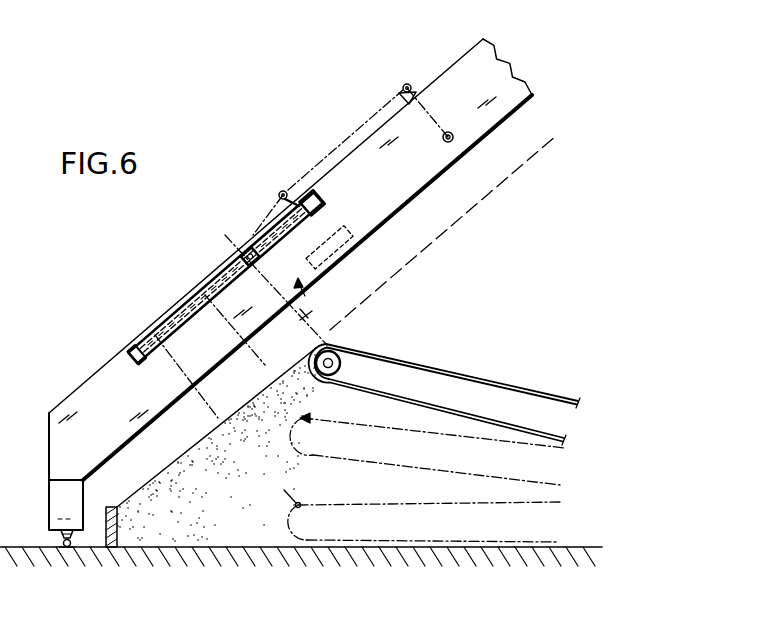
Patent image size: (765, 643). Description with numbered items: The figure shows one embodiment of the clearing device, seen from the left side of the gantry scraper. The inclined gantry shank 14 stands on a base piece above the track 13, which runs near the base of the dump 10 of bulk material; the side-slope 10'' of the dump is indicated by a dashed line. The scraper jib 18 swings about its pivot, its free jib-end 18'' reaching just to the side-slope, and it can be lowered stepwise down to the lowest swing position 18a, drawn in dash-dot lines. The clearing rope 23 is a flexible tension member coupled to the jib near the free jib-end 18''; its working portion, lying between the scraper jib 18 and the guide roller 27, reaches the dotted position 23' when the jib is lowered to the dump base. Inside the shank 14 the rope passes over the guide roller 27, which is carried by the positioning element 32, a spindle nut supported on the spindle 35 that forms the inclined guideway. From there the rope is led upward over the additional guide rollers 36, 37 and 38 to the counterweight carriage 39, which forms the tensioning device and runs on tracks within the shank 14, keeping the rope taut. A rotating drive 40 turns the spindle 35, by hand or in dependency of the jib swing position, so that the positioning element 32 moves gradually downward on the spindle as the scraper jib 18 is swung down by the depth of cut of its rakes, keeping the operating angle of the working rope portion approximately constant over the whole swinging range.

The gantry shank 14 is at (455, 65).
The guide roller 37 is at (403, 85).
The guide roller 38 is at (451, 142).
The guide roller 36 is at (279, 190).
The guide roller 27 is at (224, 251).
The positioning element 32 is at (236, 258).
The spindle 35 is at (175, 316).
The rotating drive 40 is at (314, 208).
The counterweight carriage 39 is at (346, 251).
The clearing rope 23 is at (284, 290).
The side-slope of the dump 10'' is at (443, 232).
The position of the clearing rope 23' is at (216, 427).
The free jib-end 18'' is at (358, 344).
The scraper jib 18 is at (444, 394).
The dump 10 is at (424, 507).
The lowest swing position 18a is at (382, 532).
The track 13 is at (66, 549).